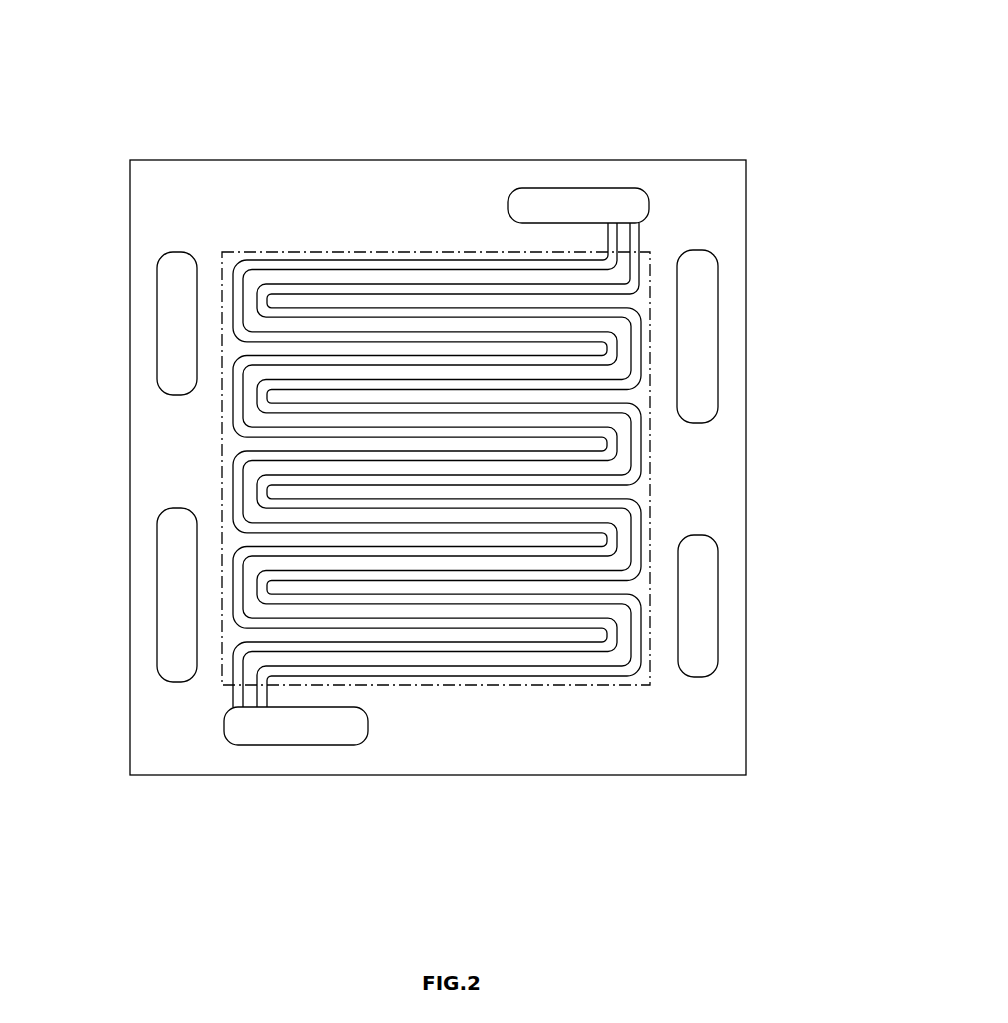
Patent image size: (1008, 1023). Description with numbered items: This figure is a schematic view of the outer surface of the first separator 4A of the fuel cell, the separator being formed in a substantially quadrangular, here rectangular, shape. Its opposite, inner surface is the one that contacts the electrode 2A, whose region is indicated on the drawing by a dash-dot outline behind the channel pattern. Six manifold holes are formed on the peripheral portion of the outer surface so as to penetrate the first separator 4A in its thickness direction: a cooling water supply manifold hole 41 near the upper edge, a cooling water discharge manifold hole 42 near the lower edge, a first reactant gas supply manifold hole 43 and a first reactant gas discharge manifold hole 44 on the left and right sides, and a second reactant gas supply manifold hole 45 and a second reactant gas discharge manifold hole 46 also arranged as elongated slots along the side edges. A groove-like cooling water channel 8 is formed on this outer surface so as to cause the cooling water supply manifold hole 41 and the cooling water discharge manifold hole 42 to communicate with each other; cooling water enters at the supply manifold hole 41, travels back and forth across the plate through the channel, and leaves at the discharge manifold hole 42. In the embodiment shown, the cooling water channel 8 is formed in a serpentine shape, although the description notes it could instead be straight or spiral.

The first separator 4A is at (443, 35).
The electrode 2A is at (650, 462).
The cooling water channel 8 is at (275, 493).
The cooling water supply manifold hole 41 is at (595, 188).
The cooling water discharge manifold hole 42 is at (300, 745).
The first reactant gas supply manifold hole 43 is at (718, 327).
The first reactant gas discharge manifold hole 44 is at (157, 573).
The second reactant gas supply manifold hole 45 is at (157, 311).
The second reactant gas discharge manifold hole 46 is at (718, 603).